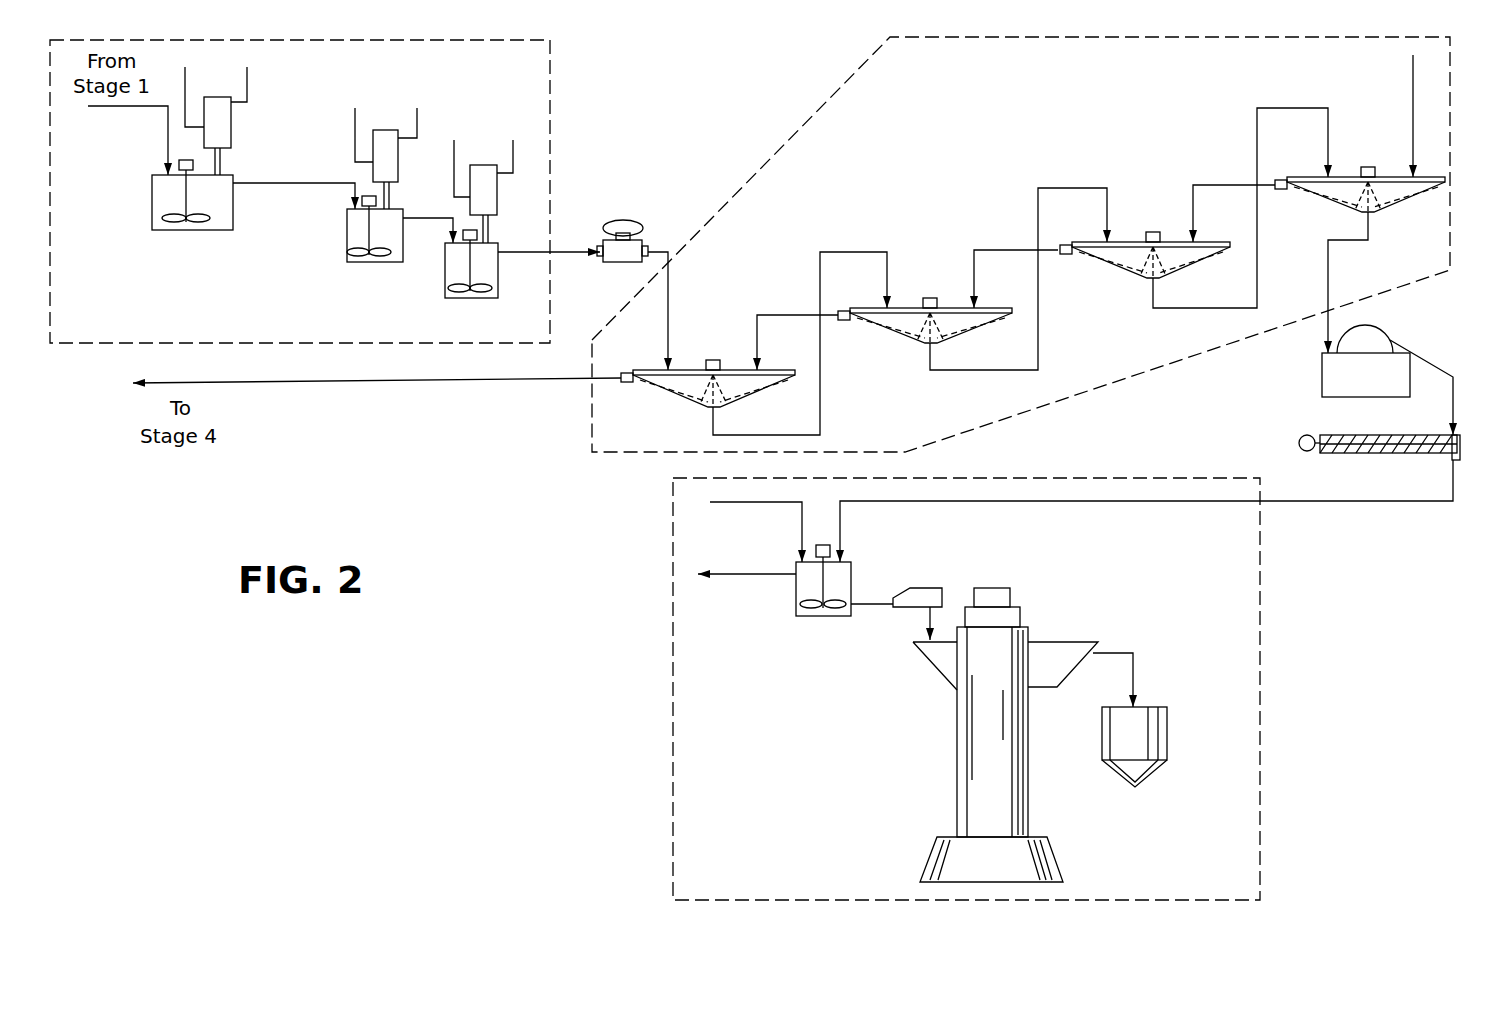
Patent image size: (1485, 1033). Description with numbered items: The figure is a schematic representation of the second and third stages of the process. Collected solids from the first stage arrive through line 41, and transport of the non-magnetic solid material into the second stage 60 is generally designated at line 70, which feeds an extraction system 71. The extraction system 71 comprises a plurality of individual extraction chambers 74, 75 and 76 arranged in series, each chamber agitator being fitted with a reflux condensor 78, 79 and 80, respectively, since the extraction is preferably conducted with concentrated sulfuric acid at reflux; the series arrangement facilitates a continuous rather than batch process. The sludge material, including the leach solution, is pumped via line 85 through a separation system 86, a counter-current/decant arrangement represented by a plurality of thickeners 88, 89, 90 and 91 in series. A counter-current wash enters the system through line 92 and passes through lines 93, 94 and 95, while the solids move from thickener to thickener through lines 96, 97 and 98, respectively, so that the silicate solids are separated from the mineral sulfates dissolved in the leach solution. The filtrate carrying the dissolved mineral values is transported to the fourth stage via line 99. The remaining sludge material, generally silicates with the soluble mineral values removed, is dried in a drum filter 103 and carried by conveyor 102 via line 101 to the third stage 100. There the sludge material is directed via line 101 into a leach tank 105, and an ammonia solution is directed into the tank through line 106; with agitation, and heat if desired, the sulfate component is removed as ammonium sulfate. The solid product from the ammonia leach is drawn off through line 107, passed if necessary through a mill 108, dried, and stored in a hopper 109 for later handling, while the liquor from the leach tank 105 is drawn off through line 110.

The line 41 is at (122, 107).
The Stage 2 60 is at (552, 158).
The line 70 is at (167, 132).
The extraction system 71 is at (437, 93).
The extraction chamber 74 is at (193, 230).
The extraction chamber 75 is at (385, 262).
The extraction chamber 76 is at (498, 284).
The reflux condensor 78 is at (231, 127).
The reflux condensor 79 is at (398, 150).
The reflux condensor 80 is at (497, 190).
The line 85 is at (668, 318).
The separation system 86 is at (773, 152).
The thickener 88 is at (740, 370).
The thickener 89 is at (960, 308).
The thickener 90 is at (1177, 242).
The thickener 91 is at (1398, 175).
The line 92 is at (1413, 90).
The line 93 is at (1235, 183).
The line 94 is at (1013, 248).
The line 95 is at (797, 313).
The line 96 is at (820, 357).
The line 97 is at (1038, 293).
The line 98 is at (1257, 230).
The line 99 is at (378, 383).
The Stage 3 100 is at (1262, 685).
The line 101 is at (1387, 501).
The conveyor 102 is at (1299, 440).
The drum filter 103 is at (1322, 370).
The leach tank 105 is at (851, 572).
The line 106 is at (777, 502).
The line 107 is at (877, 604).
The mill 108 is at (957, 800).
The hopper 109 is at (1167, 712).
The line 110 is at (777, 574).